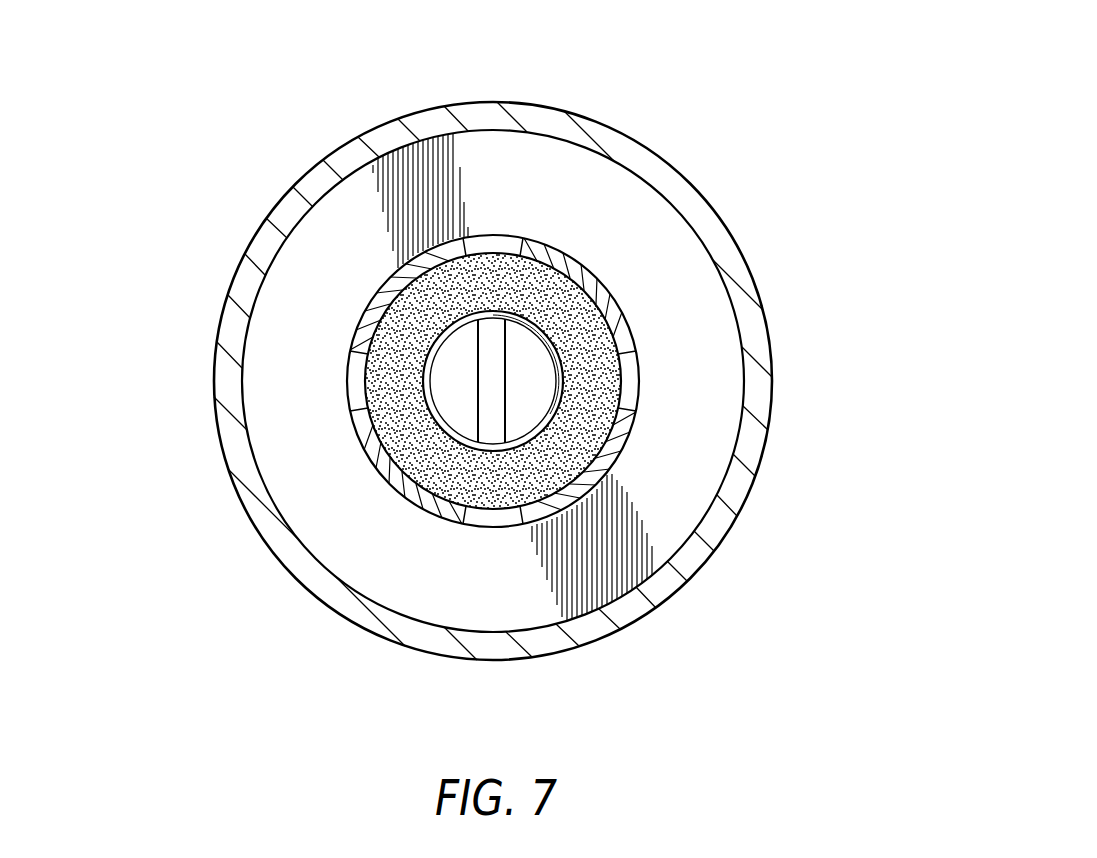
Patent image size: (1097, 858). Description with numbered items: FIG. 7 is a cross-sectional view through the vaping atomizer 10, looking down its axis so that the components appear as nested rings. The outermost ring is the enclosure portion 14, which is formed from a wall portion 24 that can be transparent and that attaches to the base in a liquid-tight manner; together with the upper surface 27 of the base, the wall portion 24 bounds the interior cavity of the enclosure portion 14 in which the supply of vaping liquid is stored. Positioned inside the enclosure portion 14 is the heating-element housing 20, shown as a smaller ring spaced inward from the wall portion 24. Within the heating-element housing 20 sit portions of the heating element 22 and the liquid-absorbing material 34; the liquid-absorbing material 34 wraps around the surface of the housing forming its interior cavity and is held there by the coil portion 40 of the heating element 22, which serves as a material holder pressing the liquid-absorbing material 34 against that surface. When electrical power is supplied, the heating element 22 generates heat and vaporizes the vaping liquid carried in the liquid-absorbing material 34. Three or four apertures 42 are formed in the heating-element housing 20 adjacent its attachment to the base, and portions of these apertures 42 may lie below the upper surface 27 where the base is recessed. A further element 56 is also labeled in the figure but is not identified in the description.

The vaping atomizer 10 is at (642, 58).
The enclosure portion 14 is at (237, 268).
The heating-element housing 20 is at (625, 318).
The heating element 22 is at (492, 405).
The wall portion 24 is at (413, 647).
The upper surface 27 is at (368, 207).
The liquid-absorbing material 34 is at (570, 297).
The coil portion 40 is at (535, 428).
The apertures 42 is at (460, 250).
The lumen channel 56 is at (495, 350).